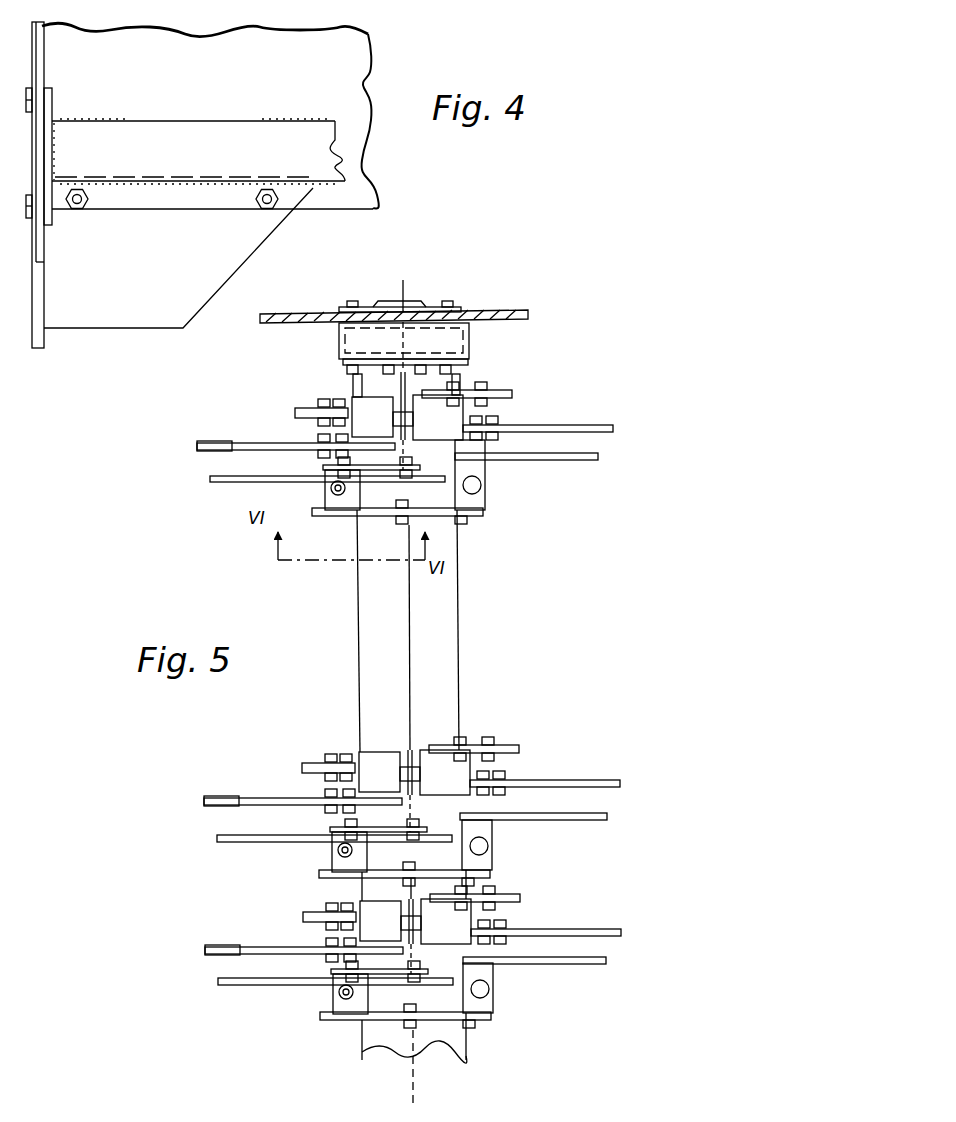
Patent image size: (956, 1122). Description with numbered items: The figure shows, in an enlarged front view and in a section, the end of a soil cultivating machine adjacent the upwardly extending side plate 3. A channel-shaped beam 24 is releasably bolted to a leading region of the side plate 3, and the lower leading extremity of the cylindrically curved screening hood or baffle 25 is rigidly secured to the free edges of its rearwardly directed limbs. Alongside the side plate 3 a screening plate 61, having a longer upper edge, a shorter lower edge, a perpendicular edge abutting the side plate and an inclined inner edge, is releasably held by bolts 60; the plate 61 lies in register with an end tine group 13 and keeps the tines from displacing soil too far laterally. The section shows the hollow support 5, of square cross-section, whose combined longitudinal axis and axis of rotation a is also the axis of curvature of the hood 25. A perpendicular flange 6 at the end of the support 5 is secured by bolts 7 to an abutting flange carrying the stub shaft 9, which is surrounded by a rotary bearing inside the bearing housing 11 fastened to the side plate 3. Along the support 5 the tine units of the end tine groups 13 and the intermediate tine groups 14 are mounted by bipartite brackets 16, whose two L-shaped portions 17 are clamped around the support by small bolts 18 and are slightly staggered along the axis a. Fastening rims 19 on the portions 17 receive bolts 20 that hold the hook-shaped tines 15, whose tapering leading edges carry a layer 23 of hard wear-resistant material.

In FIG. 4, the side plate 3 is at (37, 58).
In FIG. 5, the side plate 3 is at (516, 310).
In FIG. 5, the hollow support 5 is at (447, 633).
In FIG. 5, the perpendicular flange 6 is at (342, 363).
In FIG. 5, the bolts 7 is at (345, 374).
In FIG. 5, the stub shaft 9 is at (470, 316).
In FIG. 5, the bearing housing 11 is at (471, 330).
In FIG. 5, the end tine group 13 is at (572, 420).
In FIG. 5, the intermediate tine group 14 is at (548, 887).
In FIG. 5, the hook-shaped tine 15 is at (516, 397).
In FIG. 5, the bipartite bracket 16 is at (488, 468).
In FIG. 5, the bracket portion 17 is at (372, 412).
In FIG. 5, the small bolts 18 is at (392, 416).
In FIG. 5, the fastening rim 19 is at (520, 406).
In FIG. 5, the bolts 20 is at (513, 393).
In FIG. 5, the layer of hard wear-resistant material 23 is at (214, 478).
In FIG. 4, the channel-shaped beam 24 is at (225, 100).
In FIG. 4, the screening hood or baffle 25 is at (208, 65).
In FIG. 4, the bolts 60 is at (78, 196).
In FIG. 4, the screening plate 61 is at (232, 252).
In FIG. 5, the axis of rotation a is at (405, 290).